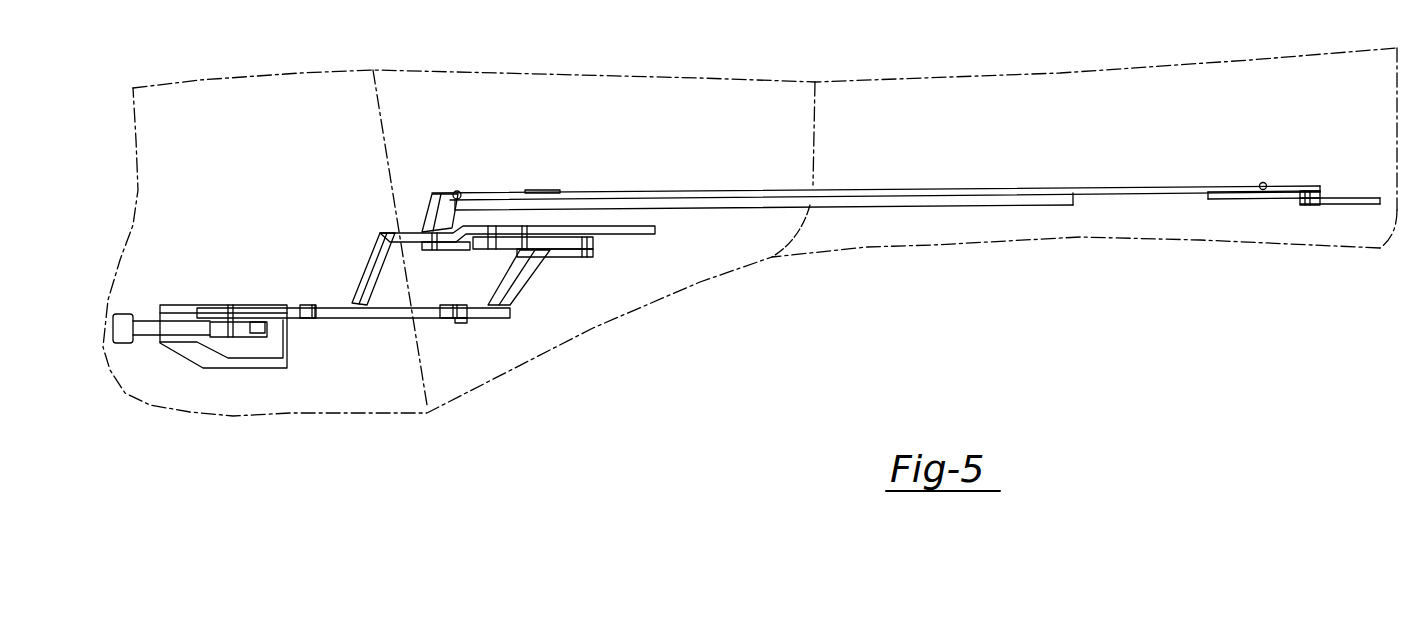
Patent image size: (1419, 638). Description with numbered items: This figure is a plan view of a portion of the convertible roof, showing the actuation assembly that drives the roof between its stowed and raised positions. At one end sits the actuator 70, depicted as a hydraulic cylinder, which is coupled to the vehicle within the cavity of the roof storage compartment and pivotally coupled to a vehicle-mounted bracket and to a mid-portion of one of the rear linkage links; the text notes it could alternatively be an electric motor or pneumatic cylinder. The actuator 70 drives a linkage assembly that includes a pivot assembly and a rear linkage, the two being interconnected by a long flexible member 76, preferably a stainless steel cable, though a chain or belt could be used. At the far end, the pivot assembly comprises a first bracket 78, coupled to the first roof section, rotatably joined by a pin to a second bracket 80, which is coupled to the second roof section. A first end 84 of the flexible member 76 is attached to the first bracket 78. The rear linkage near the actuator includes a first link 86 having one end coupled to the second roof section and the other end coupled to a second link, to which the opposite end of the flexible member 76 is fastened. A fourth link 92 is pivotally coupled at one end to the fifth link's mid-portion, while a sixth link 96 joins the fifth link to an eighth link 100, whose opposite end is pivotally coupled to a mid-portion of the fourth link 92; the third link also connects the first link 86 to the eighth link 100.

The actuator 70 is at (119, 312).
The flexible member 76 is at (1094, 186).
The first bracket 78 is at (1343, 206).
The second bracket 80 is at (1240, 200).
The first end 84 is at (1264, 182).
The first link 86 is at (937, 208).
The fourth link 92 is at (366, 266).
The sixth link 96 is at (521, 292).
The eighth link 100 is at (468, 248).